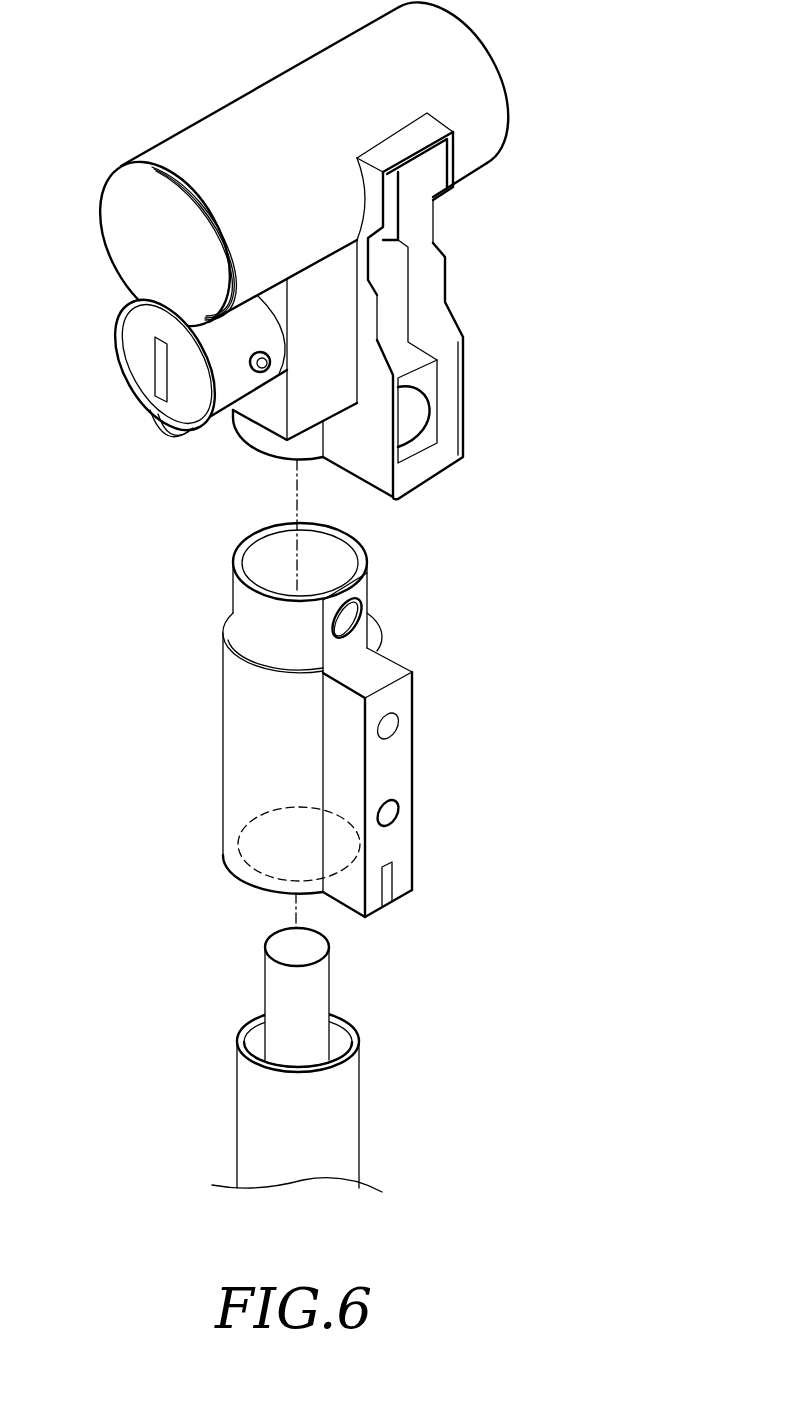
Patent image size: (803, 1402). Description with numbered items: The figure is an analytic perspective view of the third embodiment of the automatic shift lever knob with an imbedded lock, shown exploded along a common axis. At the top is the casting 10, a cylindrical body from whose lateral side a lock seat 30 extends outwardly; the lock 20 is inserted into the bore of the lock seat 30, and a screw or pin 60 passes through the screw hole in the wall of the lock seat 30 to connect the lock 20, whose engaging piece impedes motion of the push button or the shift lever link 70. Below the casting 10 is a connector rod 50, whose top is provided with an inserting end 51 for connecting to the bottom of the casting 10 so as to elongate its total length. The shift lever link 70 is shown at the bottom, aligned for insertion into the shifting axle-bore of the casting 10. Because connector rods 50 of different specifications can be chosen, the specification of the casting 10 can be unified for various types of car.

The casting 10 is at (240, 112).
The lock 20 is at (137, 352).
The lock seat 30 is at (230, 382).
The screw or pin 60 is at (261, 374).
The connector rod 50 is at (254, 720).
The inserting end 51 is at (245, 585).
The shift lever link 70 is at (272, 988).